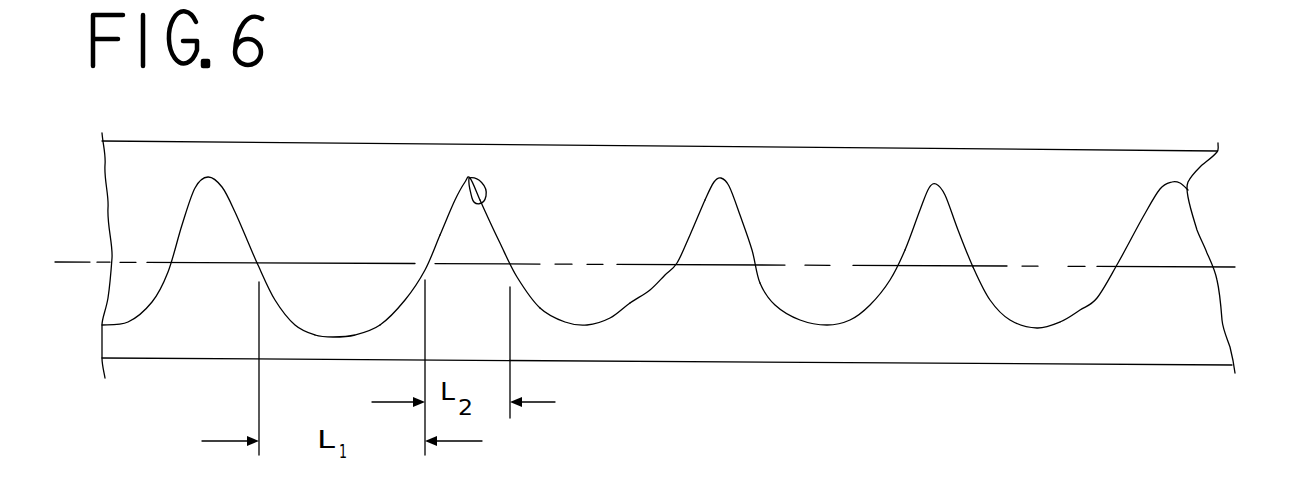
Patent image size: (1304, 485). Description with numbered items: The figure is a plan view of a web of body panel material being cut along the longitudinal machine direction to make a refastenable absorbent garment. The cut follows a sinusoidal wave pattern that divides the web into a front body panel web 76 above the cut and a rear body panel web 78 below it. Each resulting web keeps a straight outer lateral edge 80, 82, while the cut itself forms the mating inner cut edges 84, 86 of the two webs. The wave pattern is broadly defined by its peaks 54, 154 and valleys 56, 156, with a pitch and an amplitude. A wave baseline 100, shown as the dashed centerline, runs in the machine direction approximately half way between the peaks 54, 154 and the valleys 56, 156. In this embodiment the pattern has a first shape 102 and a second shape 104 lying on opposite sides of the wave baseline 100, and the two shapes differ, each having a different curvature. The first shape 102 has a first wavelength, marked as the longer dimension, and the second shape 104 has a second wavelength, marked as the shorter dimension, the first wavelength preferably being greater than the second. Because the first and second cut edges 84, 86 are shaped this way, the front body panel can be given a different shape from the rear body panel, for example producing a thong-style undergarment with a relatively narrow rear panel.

The peak 54 is at (318, 333).
The valley 56 is at (468, 178).
The front body panel web 76 is at (823, 200).
The rear body panel web 78 is at (897, 345).
The outer lateral edge 80 is at (1040, 148).
The outer lateral edge 82 is at (1043, 365).
The inner cut edge 84 is at (500, 243).
The inner cut edge 86 is at (557, 320).
The wave baseline 100 is at (1180, 266).
The first shape 102 is at (648, 298).
The second shape 104 is at (738, 222).
The peak 154 is at (488, 202).
The valley 156 is at (318, 333).